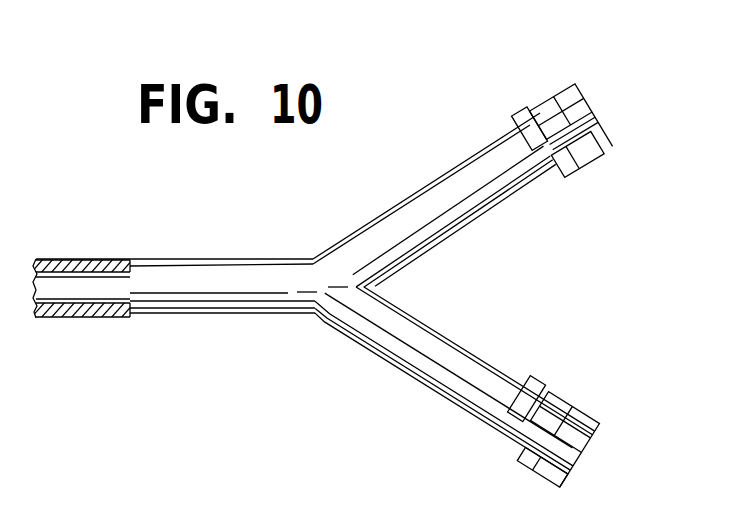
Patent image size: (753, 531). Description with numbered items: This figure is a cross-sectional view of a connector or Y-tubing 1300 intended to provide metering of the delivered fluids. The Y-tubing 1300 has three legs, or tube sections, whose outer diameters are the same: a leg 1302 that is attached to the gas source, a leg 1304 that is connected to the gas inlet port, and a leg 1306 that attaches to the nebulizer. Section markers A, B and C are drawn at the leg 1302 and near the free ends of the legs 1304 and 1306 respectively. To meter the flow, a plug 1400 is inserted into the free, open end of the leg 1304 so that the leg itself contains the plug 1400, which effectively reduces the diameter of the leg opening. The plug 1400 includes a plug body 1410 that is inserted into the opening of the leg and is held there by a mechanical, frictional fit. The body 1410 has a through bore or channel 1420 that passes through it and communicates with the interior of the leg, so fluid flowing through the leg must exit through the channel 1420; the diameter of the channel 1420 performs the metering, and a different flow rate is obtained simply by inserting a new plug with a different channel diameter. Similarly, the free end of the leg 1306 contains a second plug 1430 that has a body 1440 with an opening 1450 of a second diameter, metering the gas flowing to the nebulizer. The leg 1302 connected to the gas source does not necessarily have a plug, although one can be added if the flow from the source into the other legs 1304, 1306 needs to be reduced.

The Y-tubing 1300 is at (242, 320).
The leg 1302 is at (173, 270).
The leg 1304 is at (367, 232).
The leg 1306 is at (389, 352).
The plug 1400 is at (576, 91).
The plug body 1410 is at (508, 202).
The channel 1420 is at (516, 116).
The second plug 1430 is at (579, 391).
The body 1440 is at (570, 468).
The opening 1450 is at (533, 378).
The section A is at (70, 352).
The section B is at (481, 149).
The section C is at (473, 420).